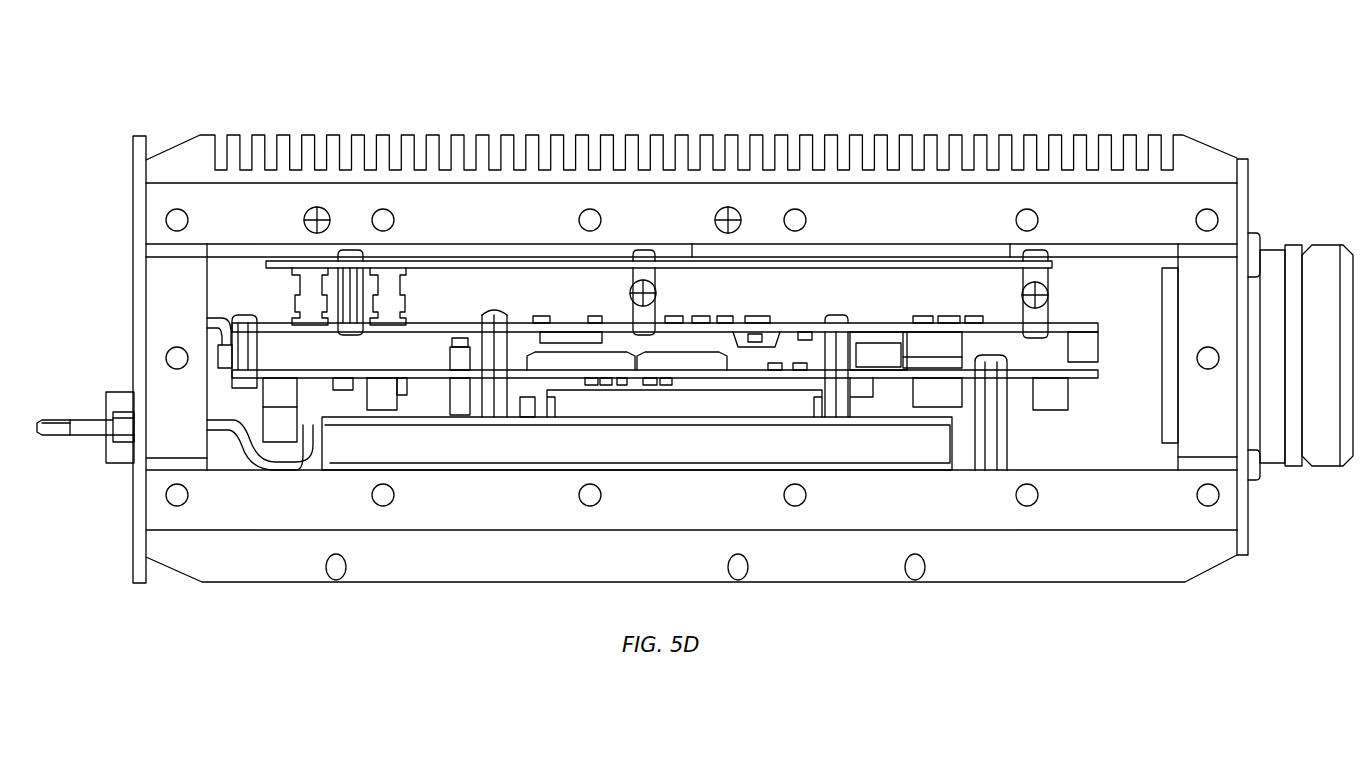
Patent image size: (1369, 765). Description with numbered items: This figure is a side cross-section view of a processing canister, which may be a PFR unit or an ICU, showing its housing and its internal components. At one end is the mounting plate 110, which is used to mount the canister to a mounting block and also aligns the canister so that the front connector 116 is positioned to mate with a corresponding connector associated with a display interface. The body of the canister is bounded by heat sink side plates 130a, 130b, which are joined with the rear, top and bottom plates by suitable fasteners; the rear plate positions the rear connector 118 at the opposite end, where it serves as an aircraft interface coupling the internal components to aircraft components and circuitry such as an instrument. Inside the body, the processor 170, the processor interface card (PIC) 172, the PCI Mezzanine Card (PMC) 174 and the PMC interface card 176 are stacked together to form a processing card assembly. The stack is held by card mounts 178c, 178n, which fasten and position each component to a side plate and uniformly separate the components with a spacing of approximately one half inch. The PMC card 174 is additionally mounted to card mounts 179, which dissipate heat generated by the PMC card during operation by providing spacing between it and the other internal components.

The mounting plate 110 is at (134, 293).
The front connector 116 is at (106, 404).
The rear connector 118 is at (1325, 245).
The heat sink side plate 130a is at (457, 585).
The heat sink side plate 130b is at (826, 135).
The processor 170 is at (668, 452).
The processor interface card (PIC) 172 is at (1102, 372).
The 1553 PCI Mezzanine Card (PMC) 174 is at (512, 258).
The PMC interface card 176 is at (862, 318).
The card mount 178c is at (333, 283).
The card mount 178n is at (1008, 430).
The card mount 179 is at (657, 290).